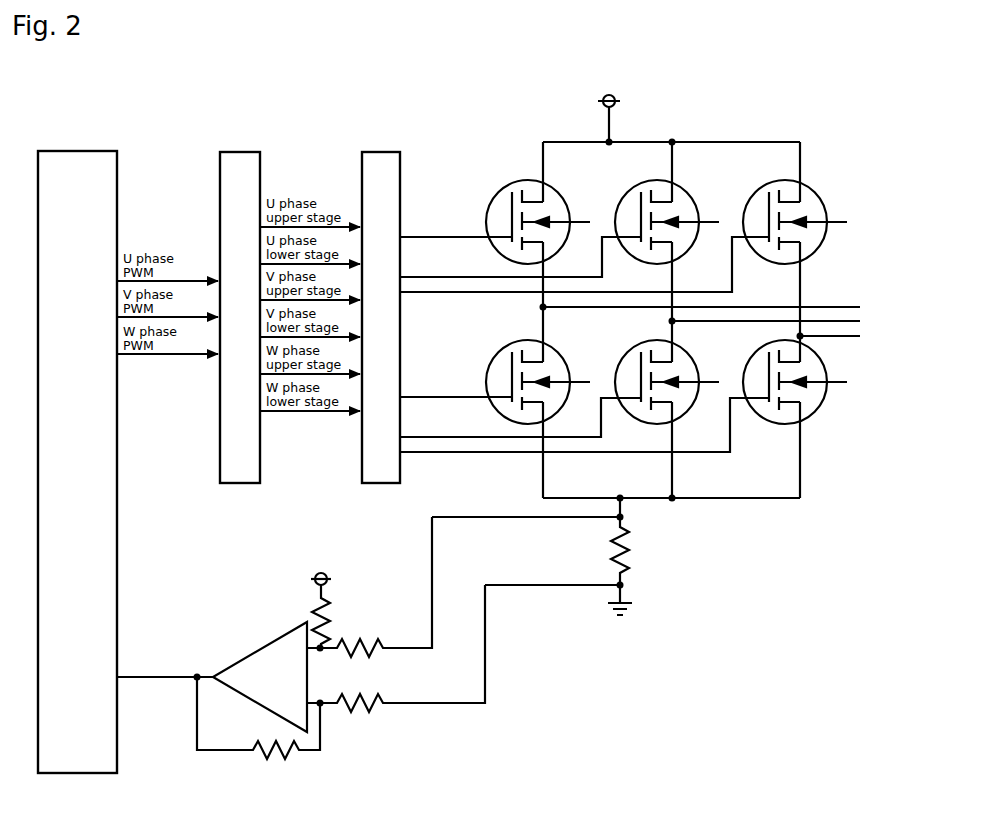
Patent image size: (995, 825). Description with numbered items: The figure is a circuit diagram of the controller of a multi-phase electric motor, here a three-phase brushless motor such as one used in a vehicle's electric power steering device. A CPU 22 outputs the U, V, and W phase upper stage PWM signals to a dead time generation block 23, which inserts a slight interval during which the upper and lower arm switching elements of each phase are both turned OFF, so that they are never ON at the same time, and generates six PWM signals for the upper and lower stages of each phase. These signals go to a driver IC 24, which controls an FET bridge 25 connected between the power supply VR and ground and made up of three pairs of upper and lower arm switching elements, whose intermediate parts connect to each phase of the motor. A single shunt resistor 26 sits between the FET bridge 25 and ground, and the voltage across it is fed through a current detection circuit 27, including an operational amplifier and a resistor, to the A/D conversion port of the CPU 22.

The CPU 22 is at (98, 151).
The dead time generation block 23 is at (240, 151).
The driver IC 24 is at (380, 151).
The FET bridge 25 is at (802, 132).
The shunt resistor 26 is at (647, 550).
The current detection circuit 27 is at (235, 590).